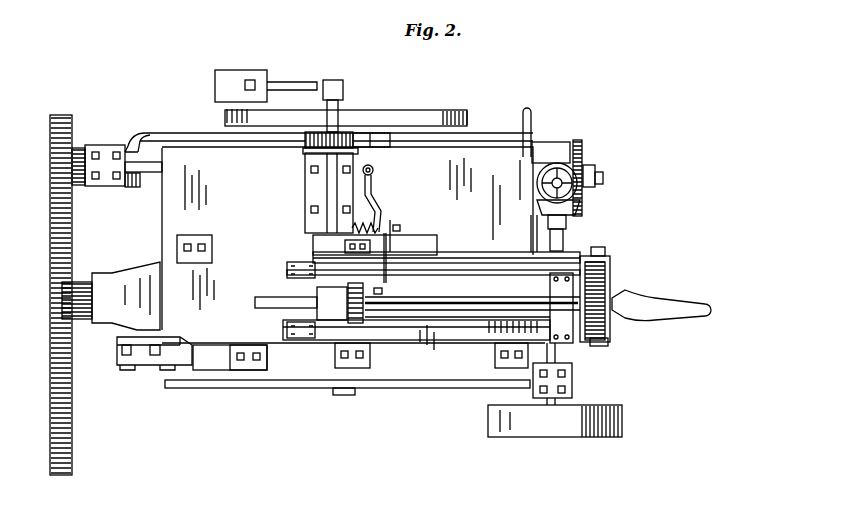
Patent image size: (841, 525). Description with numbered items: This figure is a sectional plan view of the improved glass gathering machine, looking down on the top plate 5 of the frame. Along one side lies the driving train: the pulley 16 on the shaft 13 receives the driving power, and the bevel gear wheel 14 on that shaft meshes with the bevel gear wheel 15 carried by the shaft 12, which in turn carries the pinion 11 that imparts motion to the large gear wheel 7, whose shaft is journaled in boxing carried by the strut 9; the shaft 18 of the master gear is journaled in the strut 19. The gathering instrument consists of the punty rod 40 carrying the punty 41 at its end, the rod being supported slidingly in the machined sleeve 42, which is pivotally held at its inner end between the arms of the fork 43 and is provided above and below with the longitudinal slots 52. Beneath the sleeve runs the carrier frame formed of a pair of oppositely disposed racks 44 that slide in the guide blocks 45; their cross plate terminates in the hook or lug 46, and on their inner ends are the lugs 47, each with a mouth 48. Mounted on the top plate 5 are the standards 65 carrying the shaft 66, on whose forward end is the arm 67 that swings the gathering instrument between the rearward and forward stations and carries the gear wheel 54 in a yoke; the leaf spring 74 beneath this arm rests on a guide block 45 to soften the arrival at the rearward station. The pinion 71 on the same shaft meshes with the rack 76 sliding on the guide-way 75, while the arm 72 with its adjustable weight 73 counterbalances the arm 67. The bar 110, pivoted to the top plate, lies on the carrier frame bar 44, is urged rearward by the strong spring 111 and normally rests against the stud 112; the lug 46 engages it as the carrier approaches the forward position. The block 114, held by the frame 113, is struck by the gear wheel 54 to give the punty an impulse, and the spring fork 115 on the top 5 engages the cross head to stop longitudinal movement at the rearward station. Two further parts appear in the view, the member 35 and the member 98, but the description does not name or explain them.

The top plate 5 is at (483, 168).
The gear wheel 7 is at (73, 251).
The strut 9 is at (128, 272).
The pinion 11 is at (77, 142).
The shaft 12 is at (155, 175).
The shaft 13 is at (563, 234).
The bevel gear wheel 14 is at (582, 225).
The bevel gear wheel 15 is at (584, 153).
The pulley 16 is at (592, 438).
The shaft 18 is at (344, 396).
The strut 19 is at (447, 393).
The rod 35 is at (534, 123).
The punty rod 40 is at (267, 311).
The punty 41 is at (702, 305).
The sleeve 42 is at (430, 318).
The fork 43 is at (318, 360).
The racks 44 is at (447, 268).
The guide blocks 45 is at (193, 236).
The hook or lug 46 is at (582, 258).
The lugs 47 is at (300, 265).
The mouth 48 is at (288, 295).
The slots 52 is at (462, 311).
The gear wheel 54 is at (600, 342).
The standards 65 is at (350, 155).
The shaft 66 is at (320, 184).
The arm 67 is at (440, 272).
The pinion 71 is at (305, 141).
The arm 72 is at (284, 93).
The weight 73 is at (235, 75).
The leaf spring 74 is at (531, 247).
The guide-way 75 is at (385, 140).
The rack 76 is at (365, 133).
The hand wheel 98 is at (582, 197).
The bar 110 is at (377, 188).
The spring 111 is at (382, 218).
The stud 112 is at (400, 229).
The frame 113 is at (213, 372).
The block 114 is at (168, 356).
The spring fork 115 is at (383, 293).